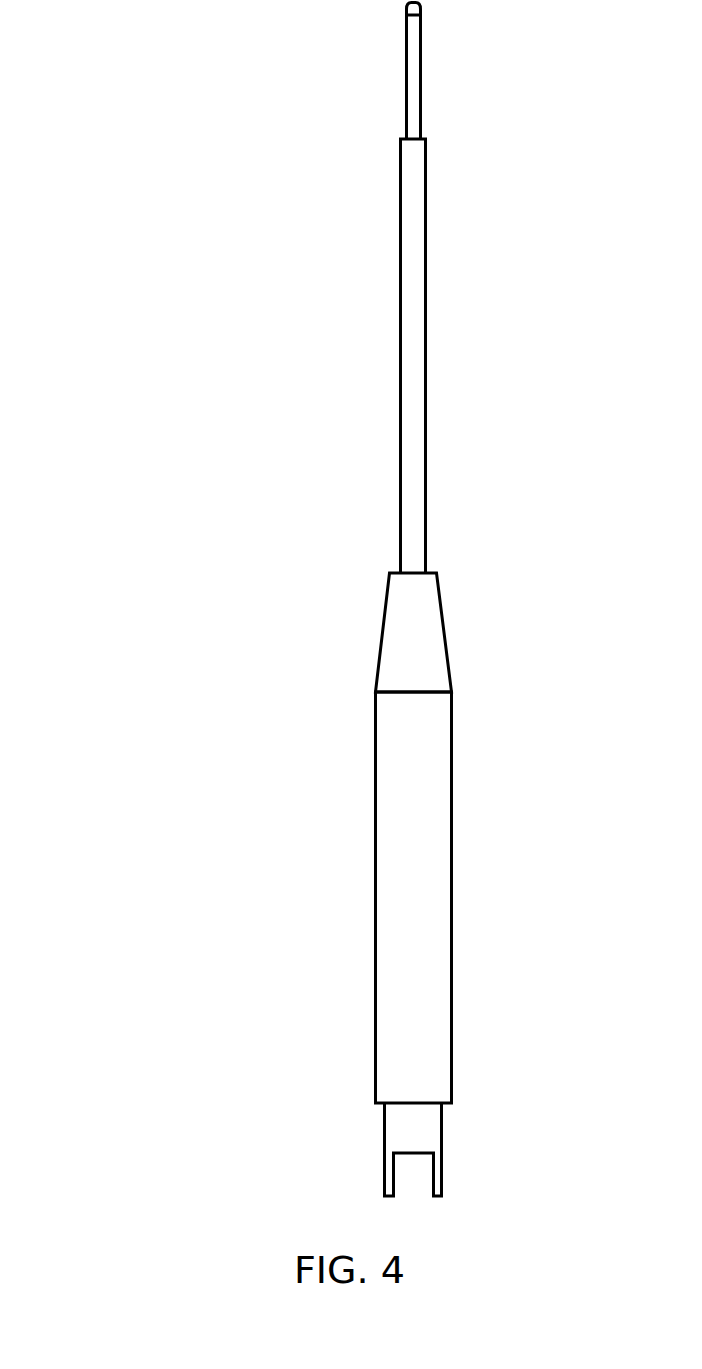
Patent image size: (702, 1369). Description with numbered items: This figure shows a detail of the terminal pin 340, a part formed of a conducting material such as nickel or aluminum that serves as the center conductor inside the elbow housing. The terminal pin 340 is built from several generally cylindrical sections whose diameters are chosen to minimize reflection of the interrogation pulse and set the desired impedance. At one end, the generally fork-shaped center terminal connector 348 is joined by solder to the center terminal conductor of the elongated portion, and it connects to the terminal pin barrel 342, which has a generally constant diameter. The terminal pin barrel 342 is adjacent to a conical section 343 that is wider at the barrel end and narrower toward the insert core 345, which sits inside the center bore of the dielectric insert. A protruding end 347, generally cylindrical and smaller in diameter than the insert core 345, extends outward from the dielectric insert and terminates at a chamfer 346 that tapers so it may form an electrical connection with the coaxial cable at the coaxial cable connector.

The terminal pin 340 is at (510, 529).
The terminal pin barrel 342 is at (376, 880).
The conical section 343 is at (398, 643).
The insert core 345 is at (408, 278).
The chamfer 346 is at (406, 4).
The protruding end 347 is at (410, 73).
The center terminal connector 348 is at (385, 1127).